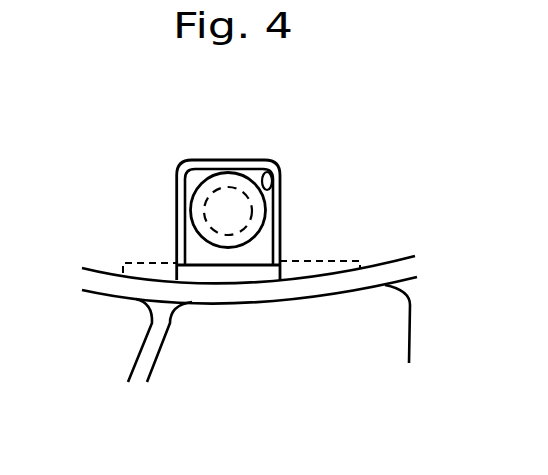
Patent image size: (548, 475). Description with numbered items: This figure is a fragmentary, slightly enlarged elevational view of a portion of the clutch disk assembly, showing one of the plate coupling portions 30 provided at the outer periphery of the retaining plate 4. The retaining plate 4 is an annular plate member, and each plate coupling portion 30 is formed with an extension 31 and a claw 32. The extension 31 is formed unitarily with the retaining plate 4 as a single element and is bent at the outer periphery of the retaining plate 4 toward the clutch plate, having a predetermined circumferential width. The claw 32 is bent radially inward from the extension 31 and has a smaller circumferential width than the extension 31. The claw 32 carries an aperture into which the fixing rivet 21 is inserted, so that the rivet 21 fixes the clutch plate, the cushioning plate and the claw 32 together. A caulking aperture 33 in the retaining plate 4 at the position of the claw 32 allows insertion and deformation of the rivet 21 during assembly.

The retaining plate 4 is at (128, 197).
The fixing rivet 21 is at (229, 200).
The plate coupling portion 30 is at (268, 317).
The extension 31 is at (333, 255).
The claw 32 is at (198, 180).
The caulking aperture 33 is at (265, 175).